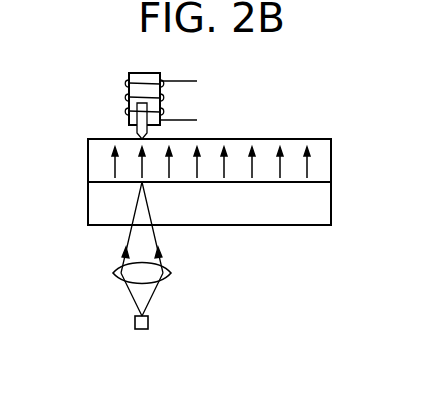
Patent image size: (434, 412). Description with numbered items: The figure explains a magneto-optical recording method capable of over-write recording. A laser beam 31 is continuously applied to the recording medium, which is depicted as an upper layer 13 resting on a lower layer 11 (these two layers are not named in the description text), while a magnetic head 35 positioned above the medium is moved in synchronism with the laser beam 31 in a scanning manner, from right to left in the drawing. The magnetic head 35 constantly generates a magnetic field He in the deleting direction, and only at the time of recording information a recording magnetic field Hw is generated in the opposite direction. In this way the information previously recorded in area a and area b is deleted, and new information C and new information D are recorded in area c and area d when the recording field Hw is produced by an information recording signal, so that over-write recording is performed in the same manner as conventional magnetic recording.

The magnetic head 35 is at (128, 104).
The magnetic recording layer 13 is at (331, 163).
The substrate 11 is at (331, 211).
The laser beam 31 is at (160, 259).